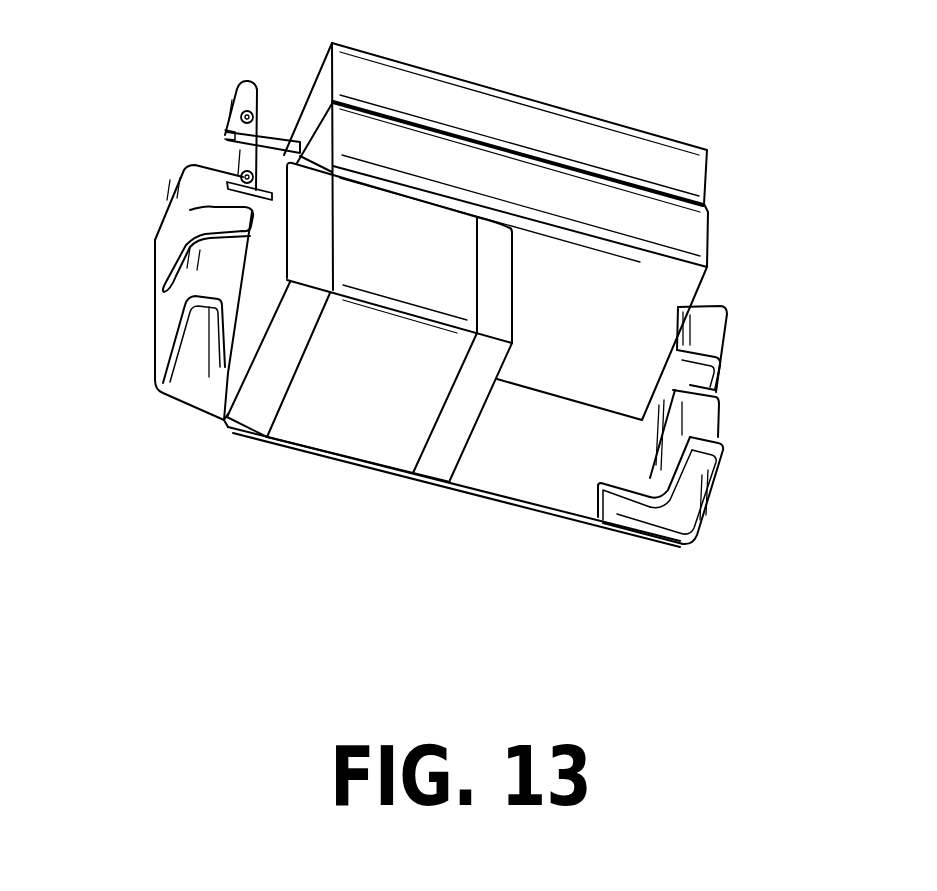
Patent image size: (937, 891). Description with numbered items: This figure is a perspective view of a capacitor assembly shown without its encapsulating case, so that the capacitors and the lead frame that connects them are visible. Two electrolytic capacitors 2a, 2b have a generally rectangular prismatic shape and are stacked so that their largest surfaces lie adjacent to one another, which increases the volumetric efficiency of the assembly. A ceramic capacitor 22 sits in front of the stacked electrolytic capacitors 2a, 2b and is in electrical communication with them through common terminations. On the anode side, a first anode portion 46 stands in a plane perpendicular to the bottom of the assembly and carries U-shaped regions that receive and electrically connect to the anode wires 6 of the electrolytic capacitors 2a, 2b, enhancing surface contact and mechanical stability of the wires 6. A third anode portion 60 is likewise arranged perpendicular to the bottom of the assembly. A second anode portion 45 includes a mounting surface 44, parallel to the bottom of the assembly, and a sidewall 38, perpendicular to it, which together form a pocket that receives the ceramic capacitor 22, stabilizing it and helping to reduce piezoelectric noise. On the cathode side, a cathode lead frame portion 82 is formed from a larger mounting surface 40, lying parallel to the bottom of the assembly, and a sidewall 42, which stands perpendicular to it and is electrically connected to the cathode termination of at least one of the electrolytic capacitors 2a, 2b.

The electrolytic capacitor 2a is at (607, 165).
The electrolytic capacitor 2b is at (599, 215).
The anode wires 6 is at (232, 183).
The ceramic capacitor 22 is at (412, 258).
The sidewall 38 is at (213, 410).
The mounting surface 40 is at (550, 463).
The sidewall 42 is at (707, 332).
The mounting surface 44 is at (250, 433).
The second anode portion 45 is at (213, 372).
The first anode portion 46 is at (245, 98).
The third anode portion 60 is at (172, 300).
The cathode lead frame portion 82 is at (600, 505).